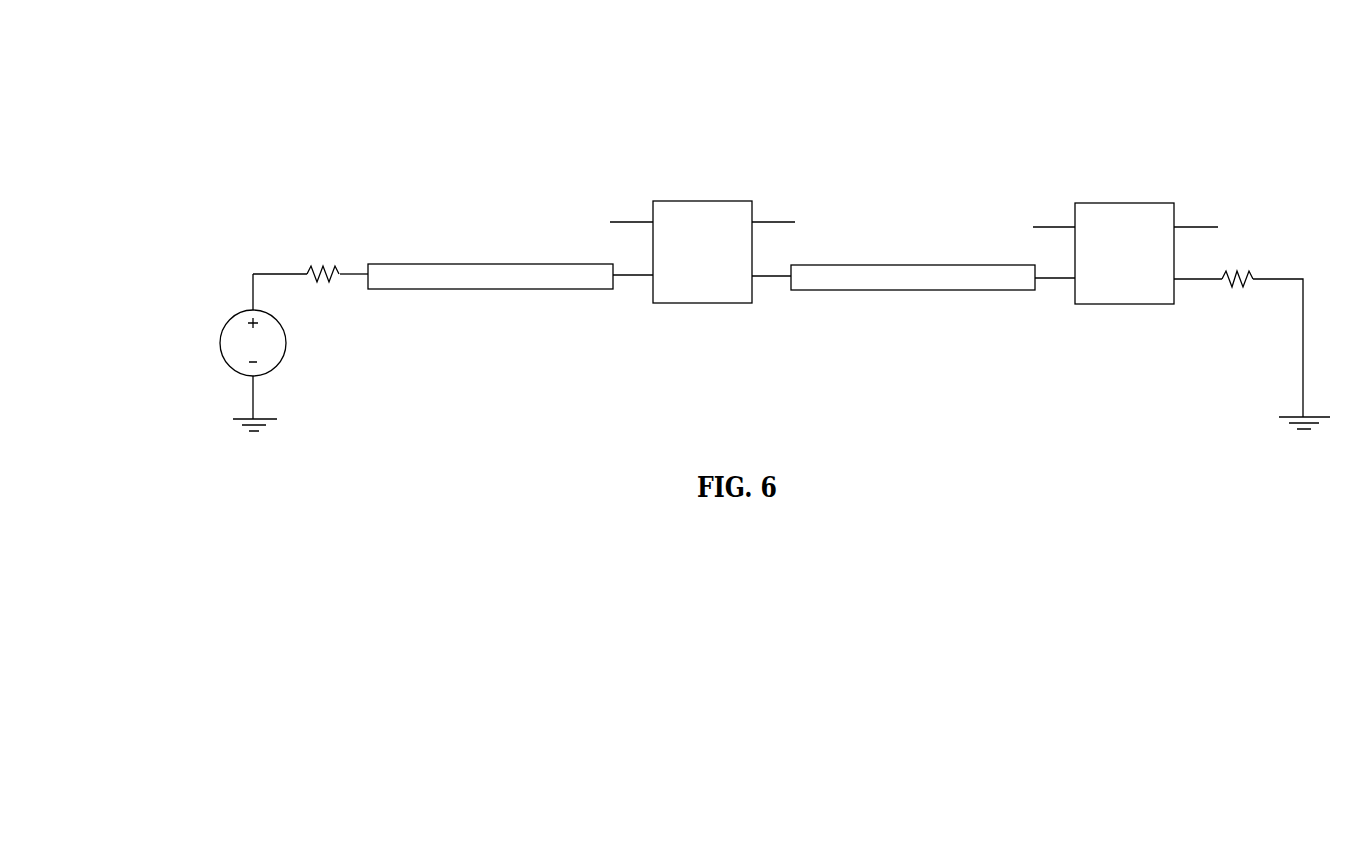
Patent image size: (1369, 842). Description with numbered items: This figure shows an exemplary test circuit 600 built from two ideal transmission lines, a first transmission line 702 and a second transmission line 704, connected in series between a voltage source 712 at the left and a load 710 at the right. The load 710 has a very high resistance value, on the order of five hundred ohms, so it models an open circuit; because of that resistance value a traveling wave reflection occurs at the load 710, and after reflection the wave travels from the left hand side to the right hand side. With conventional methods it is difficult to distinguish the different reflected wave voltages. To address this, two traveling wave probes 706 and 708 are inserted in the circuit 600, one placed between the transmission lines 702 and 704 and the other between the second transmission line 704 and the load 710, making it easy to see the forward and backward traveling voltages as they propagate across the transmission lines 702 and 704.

The circuit 600 is at (1206, 85).
The transmission line 702 is at (515, 265).
The transmission line 704 is at (944, 265).
The traveling wave probe 706 is at (727, 201).
The traveling wave probe 708 is at (1131, 203).
The load 710 is at (1240, 270).
The voltage source 712 is at (231, 328).